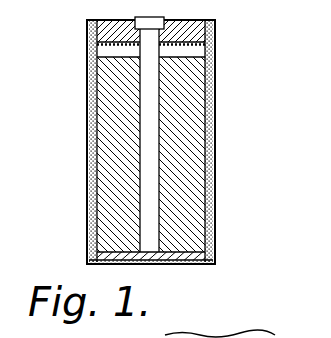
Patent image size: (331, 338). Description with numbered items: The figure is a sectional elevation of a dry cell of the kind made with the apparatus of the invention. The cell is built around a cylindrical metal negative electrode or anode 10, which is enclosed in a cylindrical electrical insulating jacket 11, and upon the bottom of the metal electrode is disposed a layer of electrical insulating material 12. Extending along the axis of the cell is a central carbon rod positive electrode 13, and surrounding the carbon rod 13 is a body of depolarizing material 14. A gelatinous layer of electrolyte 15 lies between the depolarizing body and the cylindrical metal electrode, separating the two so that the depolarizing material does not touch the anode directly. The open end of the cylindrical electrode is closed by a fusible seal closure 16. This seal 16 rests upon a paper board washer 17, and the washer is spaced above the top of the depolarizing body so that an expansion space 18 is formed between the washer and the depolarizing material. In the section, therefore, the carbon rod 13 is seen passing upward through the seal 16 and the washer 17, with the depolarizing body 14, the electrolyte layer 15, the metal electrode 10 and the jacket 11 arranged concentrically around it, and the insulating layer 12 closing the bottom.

The cylindrical metal negative electrode 10 is at (208, 84).
The electrical insulating jacket 11 is at (210, 140).
The layer of electrical insulating material 12 is at (100, 250).
The carbon rod positive electrode 13 is at (148, 160).
The body of depolarizing material 14 is at (196, 200).
The gelatinous layer of electrolyte 15 is at (93, 100).
The fusible seal closure 16 is at (101, 21).
The paper board washer 17 is at (200, 49).
The expansion space 18 is at (105, 47).